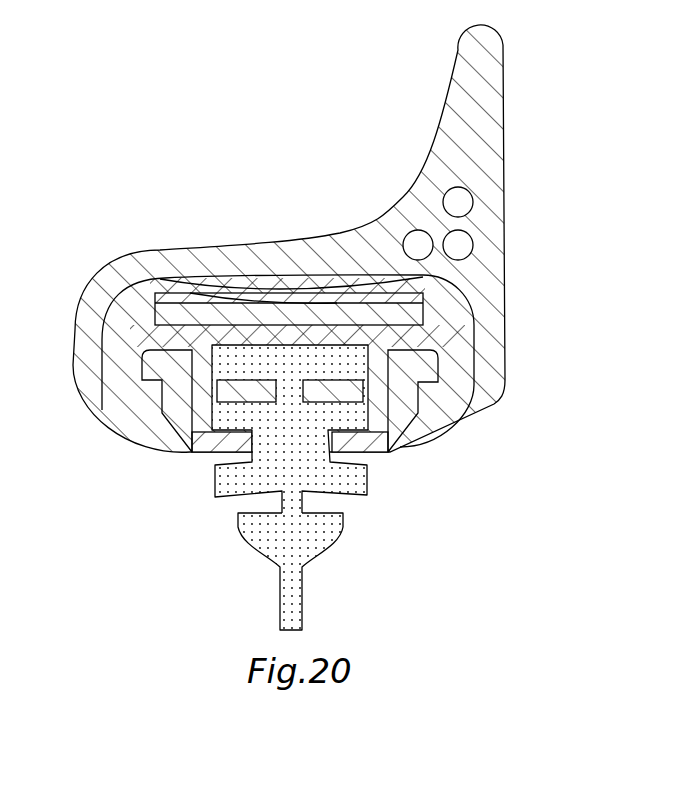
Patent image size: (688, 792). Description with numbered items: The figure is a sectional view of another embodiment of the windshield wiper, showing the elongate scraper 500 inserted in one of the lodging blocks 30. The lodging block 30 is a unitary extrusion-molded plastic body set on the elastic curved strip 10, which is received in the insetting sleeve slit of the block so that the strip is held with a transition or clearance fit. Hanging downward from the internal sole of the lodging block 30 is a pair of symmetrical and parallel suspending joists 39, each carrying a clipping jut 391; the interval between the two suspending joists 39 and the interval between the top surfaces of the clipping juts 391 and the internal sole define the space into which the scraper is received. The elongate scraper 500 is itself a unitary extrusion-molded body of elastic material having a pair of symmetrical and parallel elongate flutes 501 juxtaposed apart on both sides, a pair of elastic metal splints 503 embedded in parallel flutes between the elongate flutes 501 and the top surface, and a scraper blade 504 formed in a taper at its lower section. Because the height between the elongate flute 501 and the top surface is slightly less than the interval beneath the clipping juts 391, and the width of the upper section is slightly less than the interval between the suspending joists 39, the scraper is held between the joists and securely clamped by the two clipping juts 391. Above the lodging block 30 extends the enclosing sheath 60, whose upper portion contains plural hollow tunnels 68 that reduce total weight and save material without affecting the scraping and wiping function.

The elastic curved strip 10 is at (157, 310).
The lodging block 30 is at (127, 358).
The suspending joist 39 is at (165, 418).
The clipping jut 391 is at (235, 447).
The enclosing sheath 60 is at (465, 137).
The hollow tunnel 68 is at (458, 245).
The elongate scraper 500 is at (293, 487).
The elongate flute 501 is at (346, 462).
The elastic metal splint 503 is at (237, 390).
The scraper blade 504 is at (295, 612).